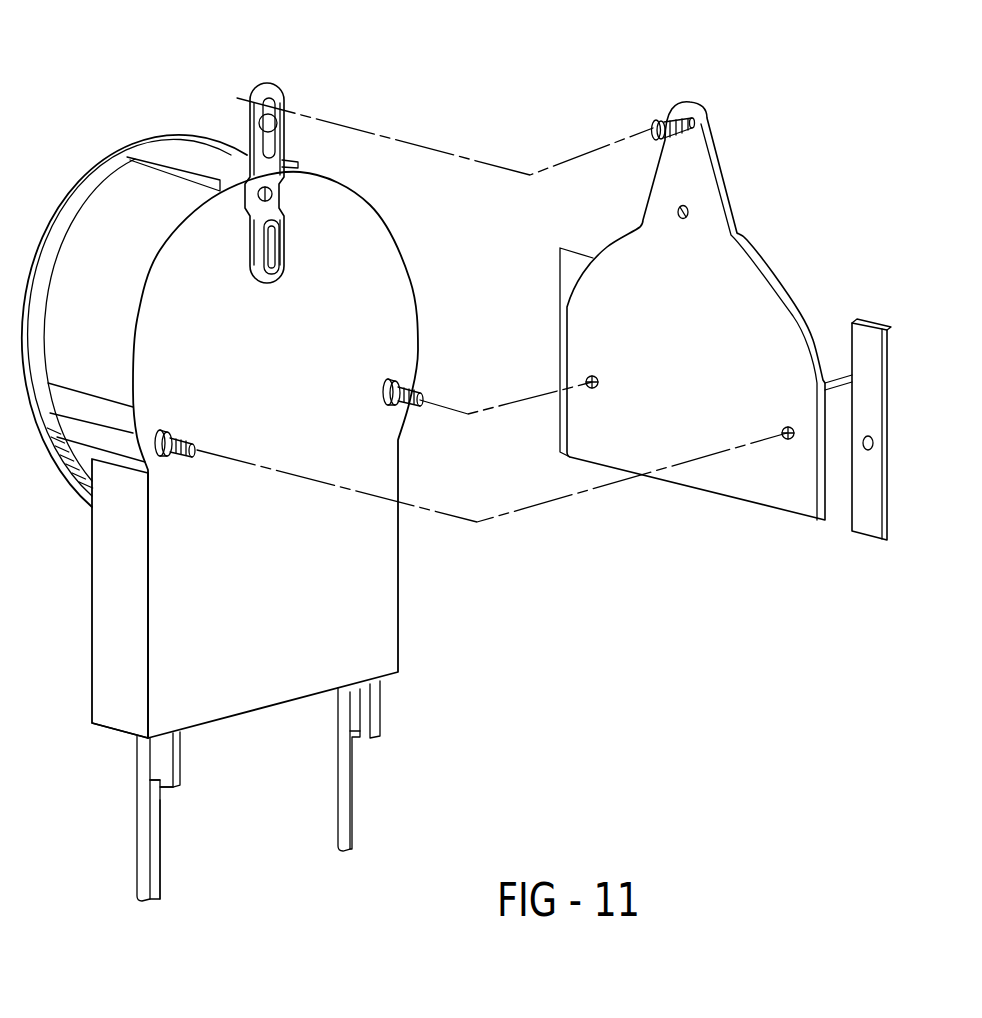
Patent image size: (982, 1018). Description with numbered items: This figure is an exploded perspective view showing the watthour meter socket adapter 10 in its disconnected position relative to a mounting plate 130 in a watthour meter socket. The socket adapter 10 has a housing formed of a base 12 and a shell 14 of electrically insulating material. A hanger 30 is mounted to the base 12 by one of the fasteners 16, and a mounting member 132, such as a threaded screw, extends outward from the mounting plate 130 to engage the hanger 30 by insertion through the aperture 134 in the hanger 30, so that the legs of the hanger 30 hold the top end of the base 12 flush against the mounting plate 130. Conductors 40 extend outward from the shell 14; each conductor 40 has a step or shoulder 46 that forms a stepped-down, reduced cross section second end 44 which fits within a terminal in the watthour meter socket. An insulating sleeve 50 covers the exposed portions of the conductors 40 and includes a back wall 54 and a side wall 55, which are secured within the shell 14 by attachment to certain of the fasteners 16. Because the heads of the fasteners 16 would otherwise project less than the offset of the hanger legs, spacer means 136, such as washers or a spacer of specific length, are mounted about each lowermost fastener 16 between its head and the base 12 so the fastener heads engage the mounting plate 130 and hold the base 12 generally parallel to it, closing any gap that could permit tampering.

The watthour meter socket adapter 10 is at (167, 93).
The base 12 is at (170, 517).
The shell 14 is at (116, 192).
The fasteners 16 is at (192, 438).
The hanger 30 is at (300, 112).
The conductor 40 is at (150, 762).
The second end 44 is at (150, 873).
The step or shoulder 46 is at (160, 787).
The insulating sleeve 50 is at (113, 630).
The back wall 54 is at (380, 578).
The side wall 55 is at (113, 692).
The mounting plate 130 is at (738, 492).
The mounting member 132 is at (655, 122).
The aperture 134 is at (247, 107).
The spacer means 136 is at (163, 430).